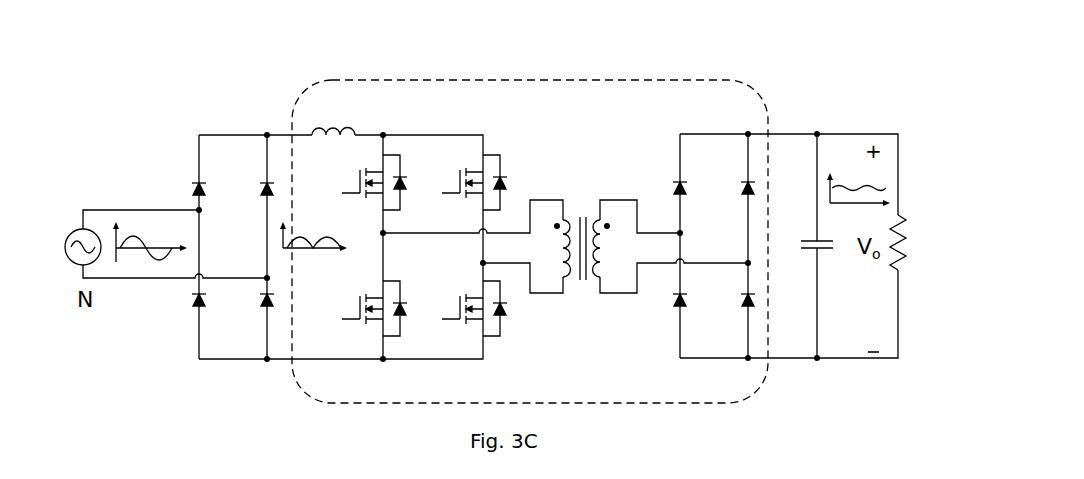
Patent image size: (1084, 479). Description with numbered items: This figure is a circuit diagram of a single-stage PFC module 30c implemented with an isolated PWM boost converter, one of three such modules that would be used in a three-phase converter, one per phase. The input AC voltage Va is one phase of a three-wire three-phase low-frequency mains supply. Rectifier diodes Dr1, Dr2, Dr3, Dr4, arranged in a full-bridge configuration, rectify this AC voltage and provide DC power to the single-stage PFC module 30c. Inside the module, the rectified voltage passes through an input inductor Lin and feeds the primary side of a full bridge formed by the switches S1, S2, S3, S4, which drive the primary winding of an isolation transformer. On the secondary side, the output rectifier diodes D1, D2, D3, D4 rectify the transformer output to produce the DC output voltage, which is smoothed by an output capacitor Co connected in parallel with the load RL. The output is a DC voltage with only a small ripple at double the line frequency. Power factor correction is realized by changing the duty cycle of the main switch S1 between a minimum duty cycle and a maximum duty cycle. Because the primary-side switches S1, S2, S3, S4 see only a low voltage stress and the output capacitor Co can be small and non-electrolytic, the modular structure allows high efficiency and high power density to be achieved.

The single-stage PFC module 30c is at (517, 214).
The input inductor Lin is at (333, 118).
The main switch S1 is at (367, 182).
The switch S2 is at (367, 308).
The switch S3 is at (467, 182).
The switch S4 is at (468, 308).
The output rectifier diode D1 is at (664, 188).
The output rectifier diode D2 is at (664, 301).
The output rectifier diode D3 is at (733, 188).
The output rectifier diode D4 is at (733, 302).
The rectifier diode Dr1 is at (181, 191).
The rectifier diode Dr2 is at (181, 300).
The rectifier diode Dr3 is at (250, 191).
The rectifier diode Dr4 is at (250, 300).
The output capacitor Co is at (802, 246).
The load RL is at (912, 242).
The input AC voltage Va is at (83, 224).